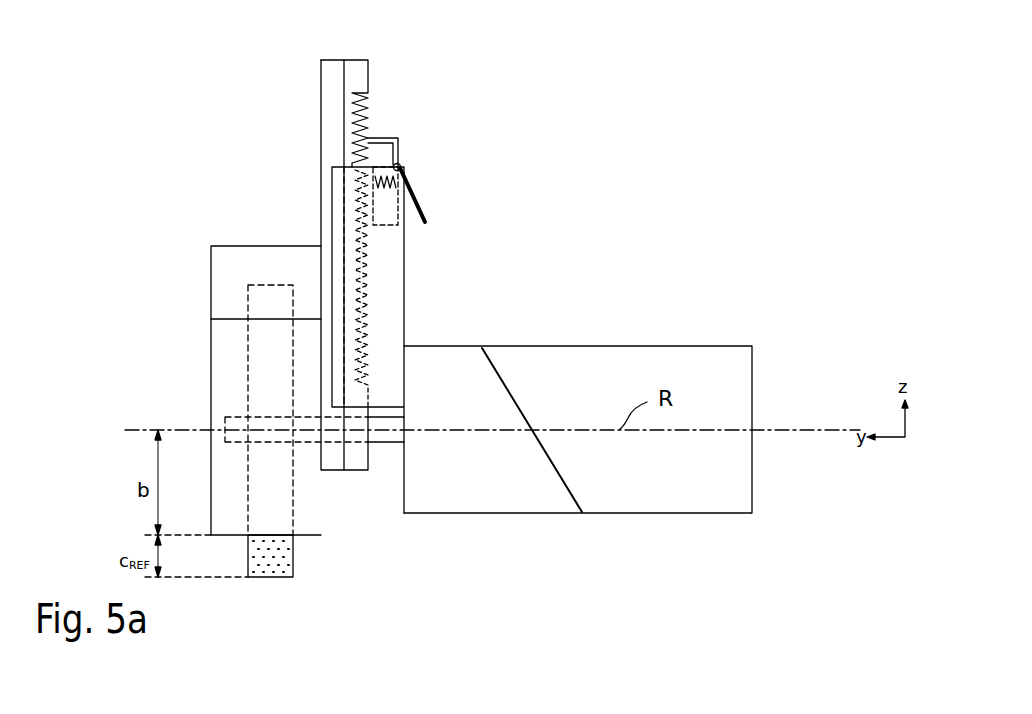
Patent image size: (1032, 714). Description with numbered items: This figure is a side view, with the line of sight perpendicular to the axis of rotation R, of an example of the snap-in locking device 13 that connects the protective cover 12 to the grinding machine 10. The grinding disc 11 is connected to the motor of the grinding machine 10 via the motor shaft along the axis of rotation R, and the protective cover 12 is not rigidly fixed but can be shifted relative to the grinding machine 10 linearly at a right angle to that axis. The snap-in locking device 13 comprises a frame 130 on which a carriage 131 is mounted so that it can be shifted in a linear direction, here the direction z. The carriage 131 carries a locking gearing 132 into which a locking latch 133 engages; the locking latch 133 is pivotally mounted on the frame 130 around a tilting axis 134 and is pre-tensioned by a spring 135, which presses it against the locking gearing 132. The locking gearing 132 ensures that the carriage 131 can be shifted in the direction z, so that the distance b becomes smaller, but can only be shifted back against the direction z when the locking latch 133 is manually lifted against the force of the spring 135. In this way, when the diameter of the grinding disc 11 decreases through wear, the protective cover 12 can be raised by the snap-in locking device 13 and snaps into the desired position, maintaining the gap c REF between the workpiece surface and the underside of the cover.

The grinding machine 10 is at (605, 513).
The grinding disc 11 is at (270, 563).
The protective cover 12 is at (252, 263).
The snap-in locking device 13 is at (450, 25).
The frame 130 is at (390, 293).
The carriage 131 is at (337, 133).
The locking gearing 132 is at (382, 108).
The locking latch 133 is at (368, 140).
The tilting axis 134 is at (403, 165).
The spring 135 is at (380, 190).